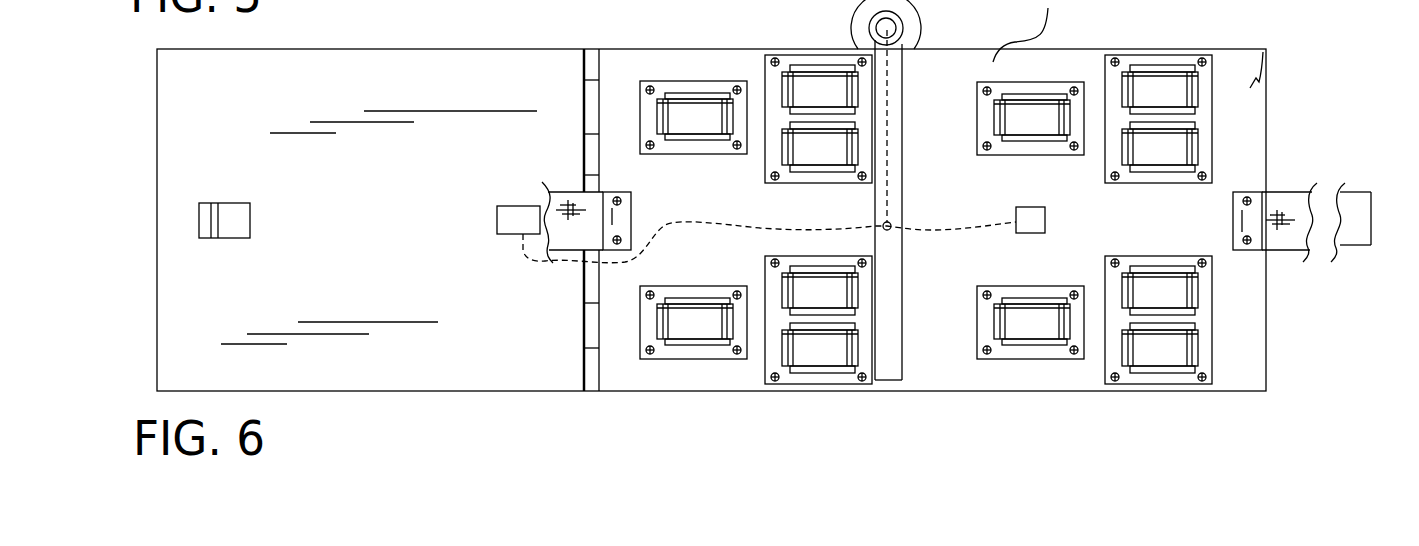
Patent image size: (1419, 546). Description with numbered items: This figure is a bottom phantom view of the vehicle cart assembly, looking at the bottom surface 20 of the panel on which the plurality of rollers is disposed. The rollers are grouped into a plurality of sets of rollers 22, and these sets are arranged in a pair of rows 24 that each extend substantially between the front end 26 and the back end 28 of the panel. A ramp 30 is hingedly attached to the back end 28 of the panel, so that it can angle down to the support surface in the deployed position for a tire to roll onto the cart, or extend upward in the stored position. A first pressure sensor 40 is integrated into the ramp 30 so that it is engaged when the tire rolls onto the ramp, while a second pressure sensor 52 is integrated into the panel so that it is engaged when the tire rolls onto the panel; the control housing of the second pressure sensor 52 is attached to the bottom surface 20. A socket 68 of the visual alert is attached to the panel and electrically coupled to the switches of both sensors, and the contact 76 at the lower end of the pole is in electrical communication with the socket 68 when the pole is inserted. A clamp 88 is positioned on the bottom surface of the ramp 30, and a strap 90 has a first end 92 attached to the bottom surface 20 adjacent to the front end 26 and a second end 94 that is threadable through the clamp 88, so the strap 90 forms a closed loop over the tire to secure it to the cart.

The bottom surface 20 is at (1266, 49).
The sets of rollers 22 is at (676, 372).
The rows 24 is at (1226, 137).
The front end 26 is at (1267, 167).
The back end 28 is at (598, 80).
The ramp 30 is at (172, 167).
The first pressure sensor 40 is at (486, 256).
The second pressure sensor 52 is at (998, 237).
The socket 68 is at (905, 101).
The contact 76 is at (878, 36).
The clamp 88 is at (205, 213).
The strap 90 is at (1358, 245).
The first end 92 is at (1233, 237).
The second end 94 is at (1372, 222).